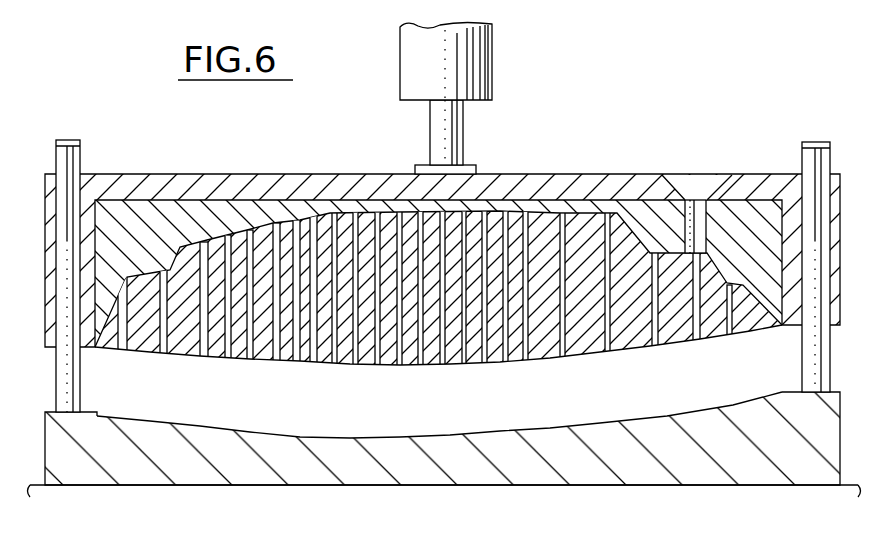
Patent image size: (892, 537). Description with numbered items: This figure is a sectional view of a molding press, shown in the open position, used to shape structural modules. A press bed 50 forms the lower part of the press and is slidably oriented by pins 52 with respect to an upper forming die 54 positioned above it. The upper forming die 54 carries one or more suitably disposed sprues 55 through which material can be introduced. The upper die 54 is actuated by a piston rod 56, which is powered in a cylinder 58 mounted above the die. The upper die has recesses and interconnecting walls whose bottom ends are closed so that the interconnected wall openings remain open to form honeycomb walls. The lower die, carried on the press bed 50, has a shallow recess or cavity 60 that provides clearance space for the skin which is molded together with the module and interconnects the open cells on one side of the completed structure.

The press bed 50 is at (756, 474).
The pins 52 is at (80, 147).
The upper forming die 54 is at (640, 178).
The sprues 55 is at (712, 178).
The piston rod 56 is at (430, 127).
The cylinder 58 is at (403, 50).
The shallow recess or cavity 60 is at (220, 424).